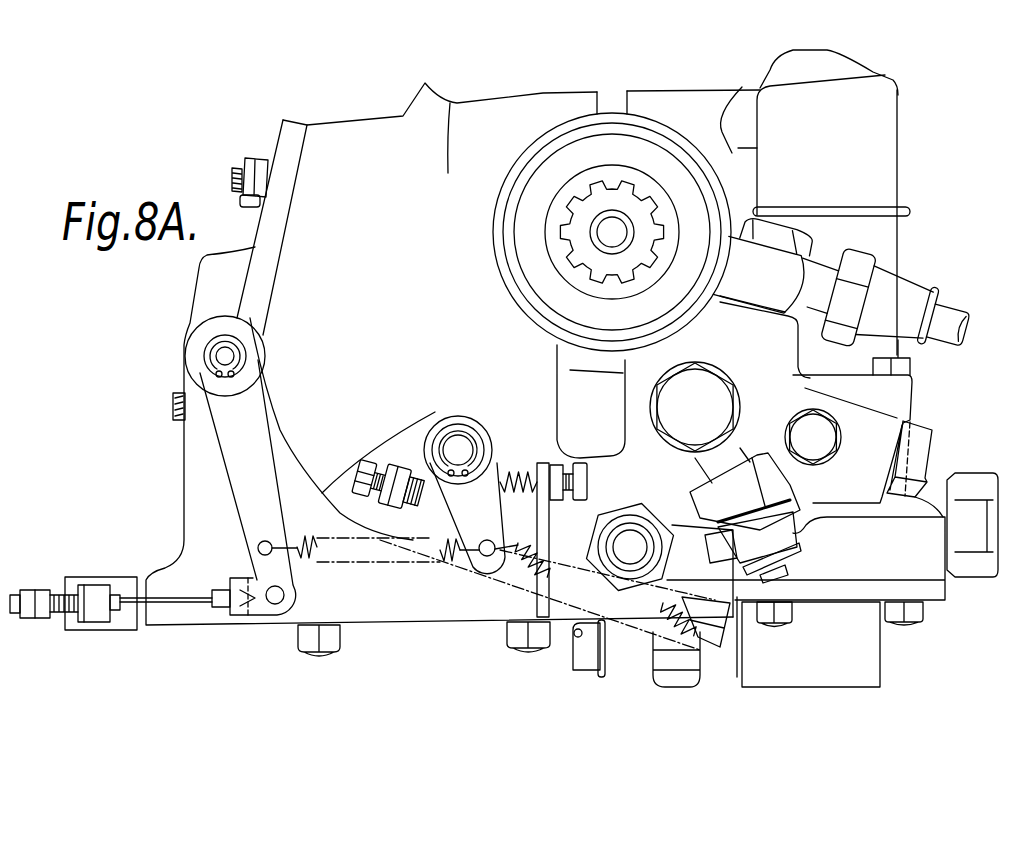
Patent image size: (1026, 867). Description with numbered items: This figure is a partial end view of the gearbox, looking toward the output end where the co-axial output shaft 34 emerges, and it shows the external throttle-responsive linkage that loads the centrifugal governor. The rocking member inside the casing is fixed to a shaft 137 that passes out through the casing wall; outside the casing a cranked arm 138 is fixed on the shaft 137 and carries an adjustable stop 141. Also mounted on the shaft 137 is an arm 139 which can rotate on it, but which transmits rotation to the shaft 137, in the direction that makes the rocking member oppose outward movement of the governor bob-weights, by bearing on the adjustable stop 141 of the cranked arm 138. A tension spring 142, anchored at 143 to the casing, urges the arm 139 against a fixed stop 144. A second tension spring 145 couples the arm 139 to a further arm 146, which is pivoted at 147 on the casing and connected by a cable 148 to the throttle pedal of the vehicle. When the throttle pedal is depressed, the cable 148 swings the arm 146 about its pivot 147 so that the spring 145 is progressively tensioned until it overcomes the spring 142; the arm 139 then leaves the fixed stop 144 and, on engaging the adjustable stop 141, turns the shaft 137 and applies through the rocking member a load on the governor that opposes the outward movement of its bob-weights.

The output shaft 34 is at (582, 241).
The shaft 137 is at (460, 445).
The cranked arm 138 is at (418, 477).
The arm 139 is at (503, 468).
The adjustable stop 141 is at (413, 503).
The tension spring 142 is at (647, 640).
The anchorage 143 is at (710, 640).
The fixed stop 144 is at (523, 477).
The tension spring 145 is at (440, 555).
The arm 146 is at (232, 468).
The pivot 147 is at (220, 353).
The cable 148 is at (165, 575).